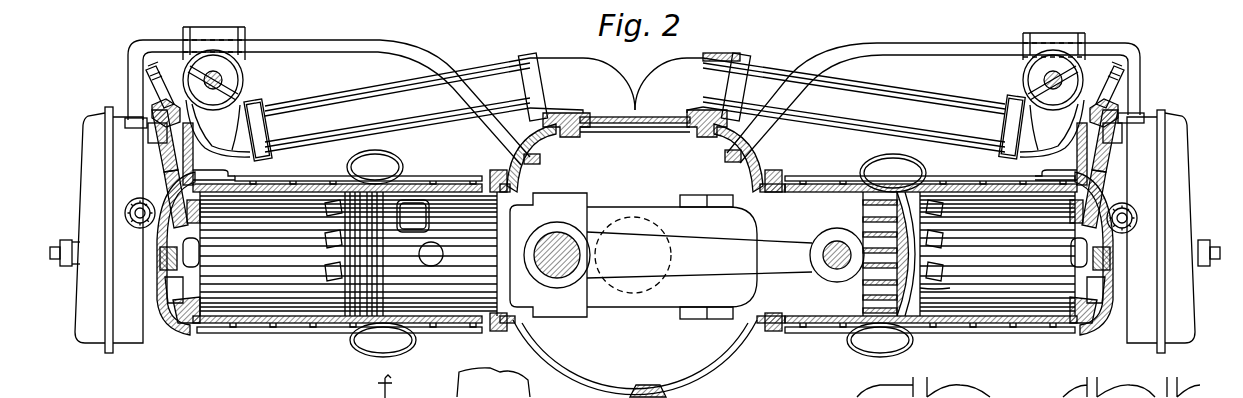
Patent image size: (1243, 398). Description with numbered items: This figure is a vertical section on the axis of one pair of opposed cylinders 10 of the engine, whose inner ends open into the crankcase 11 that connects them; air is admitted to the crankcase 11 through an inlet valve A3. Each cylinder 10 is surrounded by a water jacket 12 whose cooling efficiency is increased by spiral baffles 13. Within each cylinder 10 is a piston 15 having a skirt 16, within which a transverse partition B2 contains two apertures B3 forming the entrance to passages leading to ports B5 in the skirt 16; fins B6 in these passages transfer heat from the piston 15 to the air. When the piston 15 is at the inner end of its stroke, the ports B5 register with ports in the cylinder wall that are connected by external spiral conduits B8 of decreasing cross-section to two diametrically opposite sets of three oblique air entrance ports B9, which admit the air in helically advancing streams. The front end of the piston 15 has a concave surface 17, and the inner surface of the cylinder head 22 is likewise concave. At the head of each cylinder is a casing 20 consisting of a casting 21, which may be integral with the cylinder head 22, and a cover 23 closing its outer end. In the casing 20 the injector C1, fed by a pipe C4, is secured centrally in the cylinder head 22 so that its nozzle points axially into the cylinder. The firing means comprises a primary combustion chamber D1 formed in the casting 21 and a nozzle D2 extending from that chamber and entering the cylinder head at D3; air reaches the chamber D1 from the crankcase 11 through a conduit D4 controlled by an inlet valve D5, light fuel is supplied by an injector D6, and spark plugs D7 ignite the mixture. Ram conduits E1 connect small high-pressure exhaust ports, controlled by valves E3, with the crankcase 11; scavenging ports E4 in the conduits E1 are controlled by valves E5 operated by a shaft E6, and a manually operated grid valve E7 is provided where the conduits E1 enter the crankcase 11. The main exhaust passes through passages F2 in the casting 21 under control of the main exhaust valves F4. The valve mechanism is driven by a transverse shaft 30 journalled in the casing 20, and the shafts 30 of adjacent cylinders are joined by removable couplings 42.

The conduit D4 is at (140, 38).
The exhaust or scavenging ports E4 is at (197, 35).
The shaft E6 is at (221, 72).
The valves E5 is at (243, 80).
The injector D6 is at (147, 83).
The spark plugs D7 is at (153, 103).
The inlet valve D5 is at (150, 135).
The primary combustion chamber D1 is at (175, 135).
The nozzle D2 is at (181, 172).
The entry point of nozzle in cylinder head D3 is at (235, 197).
The water jackets 12 is at (307, 177).
The spiral baffles 13 is at (306, 333).
The cylinder head 22 is at (167, 203).
The removable couplings 42 is at (127, 212).
The shaft 30 is at (135, 220).
The pipe C4 is at (58, 247).
The injector C1 is at (158, 253).
The valves E3 is at (198, 224).
The cylinders 10 is at (637, 254).
The air entrance ports B9 is at (324, 214).
The main exhaust valves F4 is at (196, 258).
The cover 23 is at (87, 310).
The passages F2 is at (182, 322).
The casing 20 is at (113, 355).
The casting 21 is at (180, 318).
The external conduits B8 is at (392, 166).
The ram conduits E1 is at (634, 107).
The ports B5 is at (418, 220).
The piston 15 is at (850, 196).
The grid valve E7 is at (655, 124).
The crankcase 11 is at (789, 359).
The inlet valve A3 is at (638, 387).
The skirt 16 is at (815, 194).
The transverse partition B2 is at (812, 242).
The fins B6 is at (857, 257).
The apertures B3 is at (850, 305).
The concave surface 17 is at (930, 293).